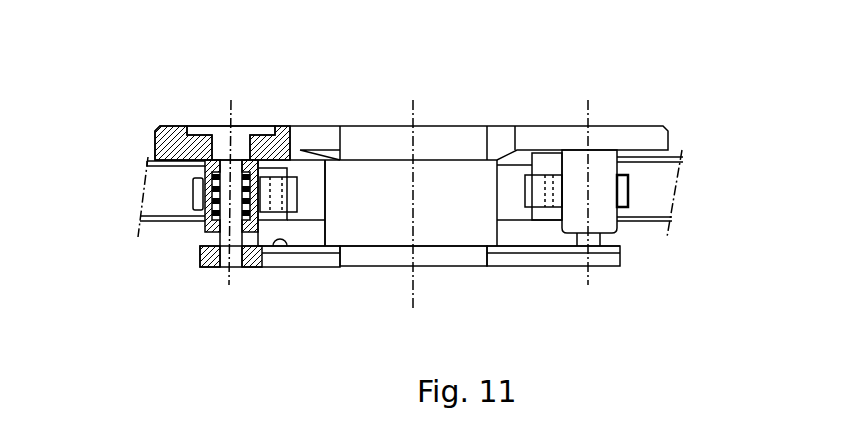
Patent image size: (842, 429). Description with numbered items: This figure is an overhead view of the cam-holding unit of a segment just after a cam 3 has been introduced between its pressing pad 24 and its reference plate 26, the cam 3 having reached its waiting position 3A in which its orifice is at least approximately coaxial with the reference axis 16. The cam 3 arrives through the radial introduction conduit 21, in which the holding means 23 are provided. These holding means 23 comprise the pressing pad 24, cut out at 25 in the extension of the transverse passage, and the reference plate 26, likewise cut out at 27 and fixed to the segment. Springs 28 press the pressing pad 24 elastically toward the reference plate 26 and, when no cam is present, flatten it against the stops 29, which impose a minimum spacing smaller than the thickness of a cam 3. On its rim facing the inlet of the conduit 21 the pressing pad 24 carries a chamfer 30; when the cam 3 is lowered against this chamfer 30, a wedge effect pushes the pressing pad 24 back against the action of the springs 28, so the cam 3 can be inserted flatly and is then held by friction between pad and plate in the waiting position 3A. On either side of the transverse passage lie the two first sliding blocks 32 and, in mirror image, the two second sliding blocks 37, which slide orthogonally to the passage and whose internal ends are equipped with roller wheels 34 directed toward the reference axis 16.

The cam 3 is at (443, 175).
The waiting position 3A is at (372, 96).
The cutout of reference plate 27 is at (397, 133).
The reference plate 26 is at (559, 130).
The roller wheels 34 is at (290, 175).
The stops 29 is at (233, 150).
The holding means 23 is at (700, 160).
The first sliding blocks 32 is at (663, 188).
The second sliding blocks 37 is at (165, 188).
The springs 28 is at (203, 213).
The chamfer 30 is at (290, 268).
The introduction conduit 21 is at (313, 250).
The reference axis 16 is at (412, 283).
The cutout of pressing pad 25 is at (443, 250).
The pressing pad 24 is at (533, 262).